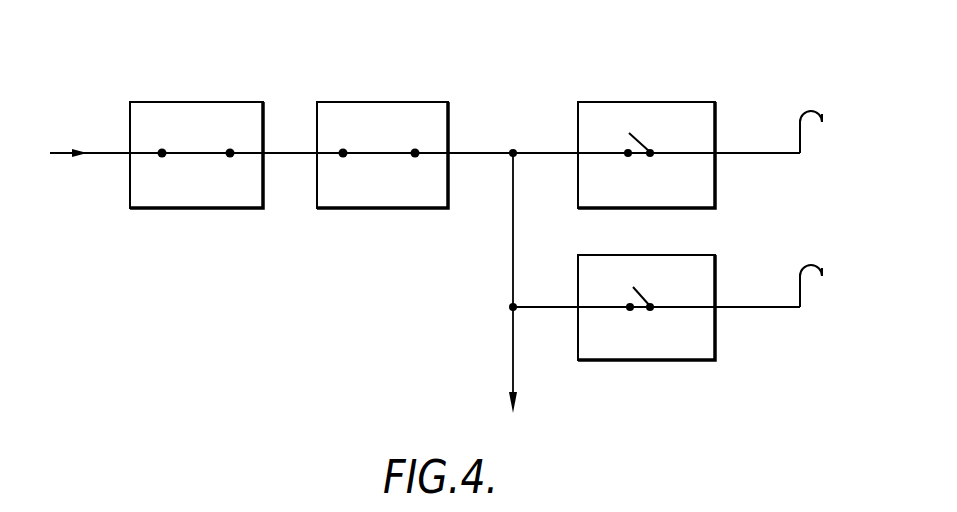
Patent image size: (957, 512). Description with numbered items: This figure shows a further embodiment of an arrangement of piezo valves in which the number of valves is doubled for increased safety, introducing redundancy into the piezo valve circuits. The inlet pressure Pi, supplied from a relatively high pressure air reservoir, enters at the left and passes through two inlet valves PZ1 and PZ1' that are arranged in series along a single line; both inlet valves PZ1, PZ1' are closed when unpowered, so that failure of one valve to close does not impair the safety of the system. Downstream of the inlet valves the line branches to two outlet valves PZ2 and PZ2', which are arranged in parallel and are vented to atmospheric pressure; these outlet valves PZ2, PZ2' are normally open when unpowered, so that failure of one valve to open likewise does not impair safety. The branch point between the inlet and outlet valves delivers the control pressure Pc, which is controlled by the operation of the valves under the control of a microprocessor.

The inlet piezo valve PZ1 is at (196, 140).
The second inlet piezo valve PZ1' is at (382, 135).
The outlet piezo valve PZ2 is at (700, 140).
The second outlet piezo valve PZ2' is at (700, 291).
The inlet pressure Pi is at (90, 169).
The control pressure Pc is at (514, 301).